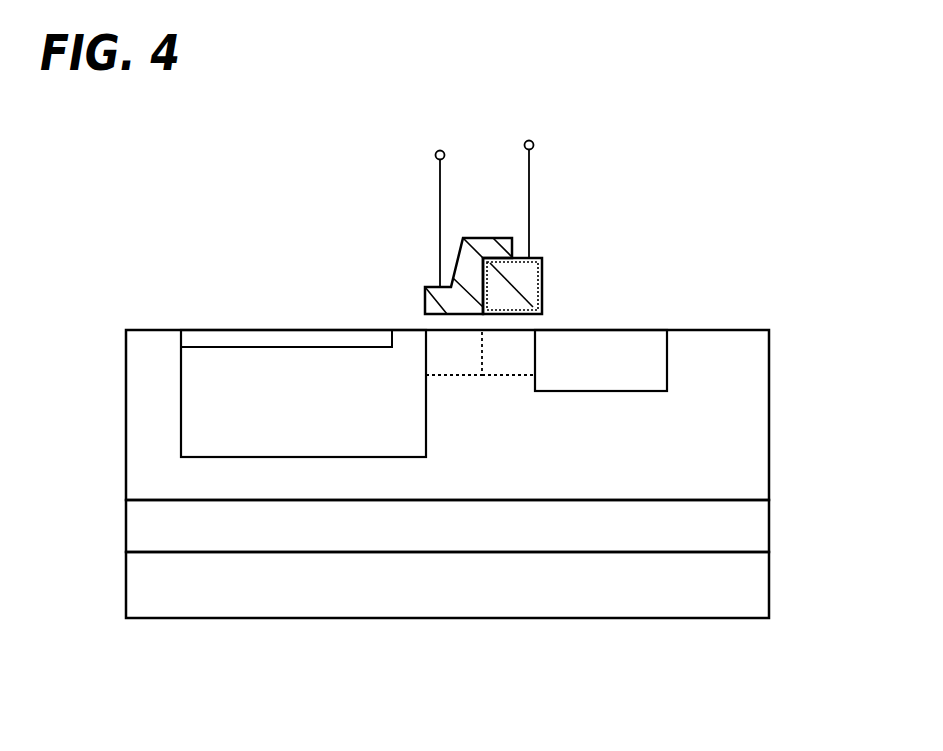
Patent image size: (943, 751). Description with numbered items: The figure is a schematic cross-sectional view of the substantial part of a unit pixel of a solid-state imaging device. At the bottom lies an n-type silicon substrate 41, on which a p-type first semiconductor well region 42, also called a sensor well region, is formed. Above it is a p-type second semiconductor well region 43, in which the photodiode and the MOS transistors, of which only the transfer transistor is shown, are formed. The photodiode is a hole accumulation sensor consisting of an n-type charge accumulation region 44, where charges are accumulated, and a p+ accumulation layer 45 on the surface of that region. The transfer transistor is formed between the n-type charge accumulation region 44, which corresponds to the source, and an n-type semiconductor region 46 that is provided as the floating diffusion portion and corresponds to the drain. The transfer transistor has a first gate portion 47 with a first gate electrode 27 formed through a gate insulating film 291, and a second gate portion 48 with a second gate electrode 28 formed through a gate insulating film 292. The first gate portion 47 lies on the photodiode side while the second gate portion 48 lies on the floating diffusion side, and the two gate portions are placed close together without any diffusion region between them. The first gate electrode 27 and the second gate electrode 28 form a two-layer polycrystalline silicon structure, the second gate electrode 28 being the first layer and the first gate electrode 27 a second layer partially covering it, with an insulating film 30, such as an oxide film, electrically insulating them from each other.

The first gate electrode 27 is at (437, 303).
The second gate electrode 28 is at (527, 288).
The insulating film 30 is at (485, 260).
The n-type silicon substrate 41 is at (750, 582).
The p-type first semiconductor well region 42 is at (750, 522).
The p-type second semiconductor well region 43 is at (745, 455).
The n-type charge accumulation region 44 is at (213, 373).
The p+ accumulation layer 45 is at (262, 340).
The n-type semiconductor region 46 is at (645, 359).
The first gate portion 47 is at (432, 218).
The second gate portion 48 is at (550, 211).
The gate insulating film 291 is at (440, 320).
The gate insulating film 292 is at (532, 318).